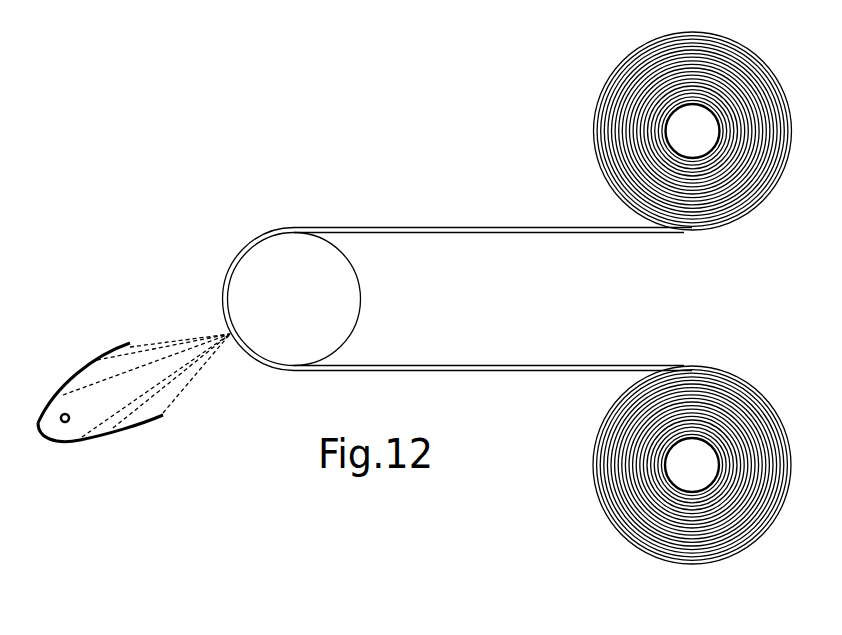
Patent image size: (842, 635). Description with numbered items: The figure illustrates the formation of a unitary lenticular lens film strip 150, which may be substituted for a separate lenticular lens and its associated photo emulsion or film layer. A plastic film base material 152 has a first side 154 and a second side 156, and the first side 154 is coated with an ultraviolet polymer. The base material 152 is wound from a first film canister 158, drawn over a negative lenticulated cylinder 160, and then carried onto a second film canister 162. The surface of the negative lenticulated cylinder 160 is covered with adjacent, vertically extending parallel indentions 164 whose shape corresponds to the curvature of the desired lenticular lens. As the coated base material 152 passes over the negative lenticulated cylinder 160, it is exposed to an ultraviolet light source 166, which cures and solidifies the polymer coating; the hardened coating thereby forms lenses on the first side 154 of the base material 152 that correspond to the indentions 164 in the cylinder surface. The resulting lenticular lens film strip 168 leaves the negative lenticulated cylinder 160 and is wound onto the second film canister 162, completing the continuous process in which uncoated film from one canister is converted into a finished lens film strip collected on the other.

The unitary lenticular lens film strip 150 is at (630, 543).
The plastic film base material 152 is at (617, 64).
The first side 154 is at (483, 233).
The second side 156 is at (435, 227).
The first film canister 158 is at (593, 120).
The negative lenticulated cylinder 160 is at (340, 312).
The second film canister 162 is at (597, 464).
The parallel indentions 164 is at (348, 262).
The ultraviolet light source 166 is at (92, 370).
The lenticular lens film strip 168 is at (558, 366).